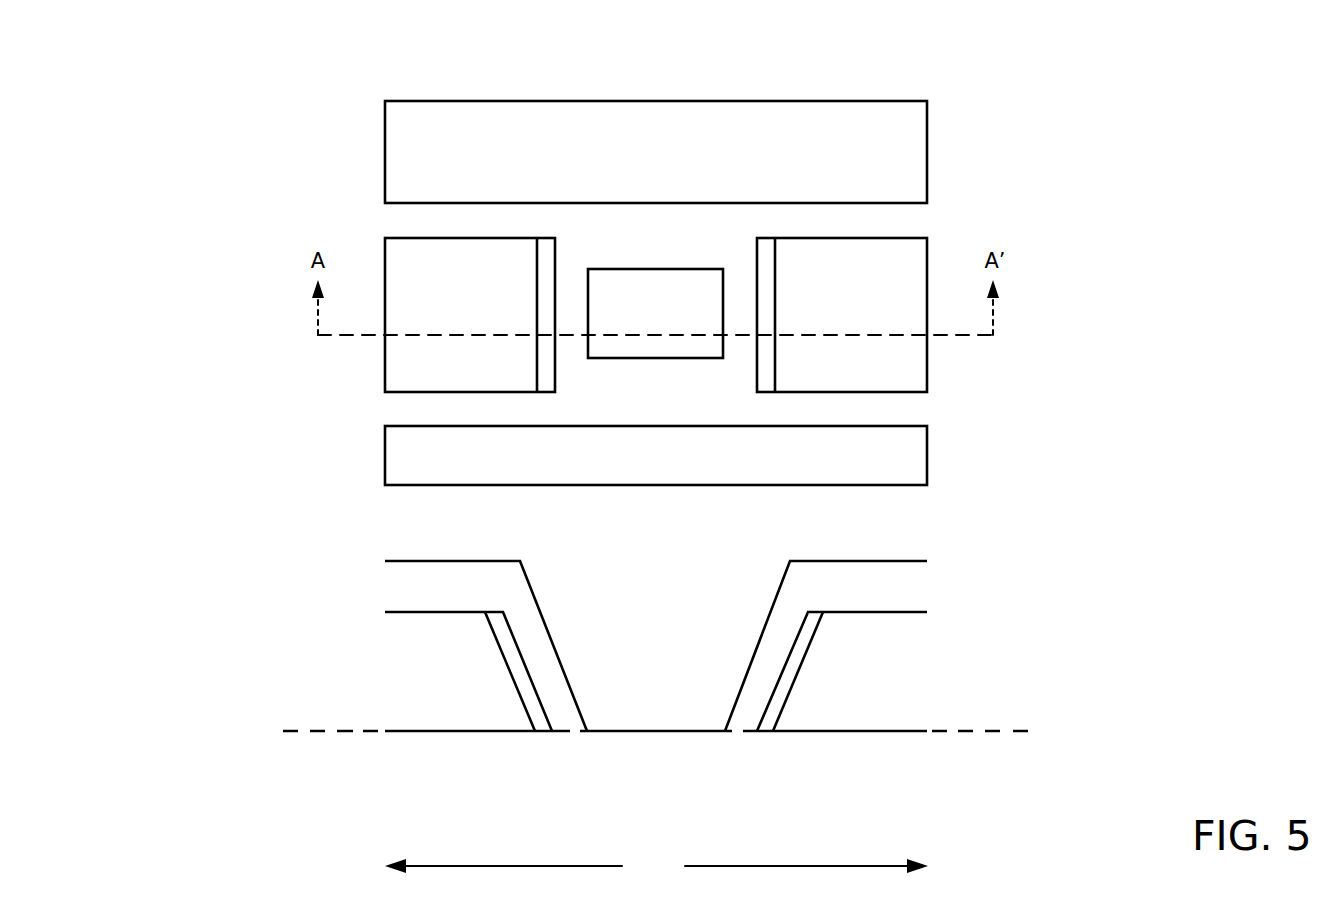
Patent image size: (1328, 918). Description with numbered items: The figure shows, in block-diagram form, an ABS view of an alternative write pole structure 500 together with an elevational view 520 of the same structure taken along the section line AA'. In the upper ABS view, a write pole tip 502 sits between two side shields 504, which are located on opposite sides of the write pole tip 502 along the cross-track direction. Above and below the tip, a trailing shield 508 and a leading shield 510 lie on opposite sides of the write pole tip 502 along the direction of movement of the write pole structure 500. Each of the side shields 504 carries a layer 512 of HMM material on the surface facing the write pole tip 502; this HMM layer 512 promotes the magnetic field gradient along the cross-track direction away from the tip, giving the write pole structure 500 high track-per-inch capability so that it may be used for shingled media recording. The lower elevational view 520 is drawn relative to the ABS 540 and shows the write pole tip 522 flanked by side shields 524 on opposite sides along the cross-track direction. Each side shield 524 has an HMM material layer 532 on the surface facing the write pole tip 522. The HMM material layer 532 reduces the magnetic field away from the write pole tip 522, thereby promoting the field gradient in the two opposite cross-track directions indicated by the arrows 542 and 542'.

The write pole structure 500 is at (191, 63).
The write pole tip 502 is at (636, 325).
The side shields 504 is at (451, 325).
The trailing shield 508 is at (636, 164).
The leading shield 510 is at (636, 467).
The HMM material layer 512 is at (738, 251).
The elevational view 520 is at (214, 630).
The write pole tip 522 is at (634, 691).
The side shields 524 is at (401, 691).
The HMM material layer 532 is at (547, 733).
The ABS 540 is at (318, 733).
The direction of magnetic field gradient 542 is at (454, 866).
The direction of magnetic field gradient 542' is at (852, 866).